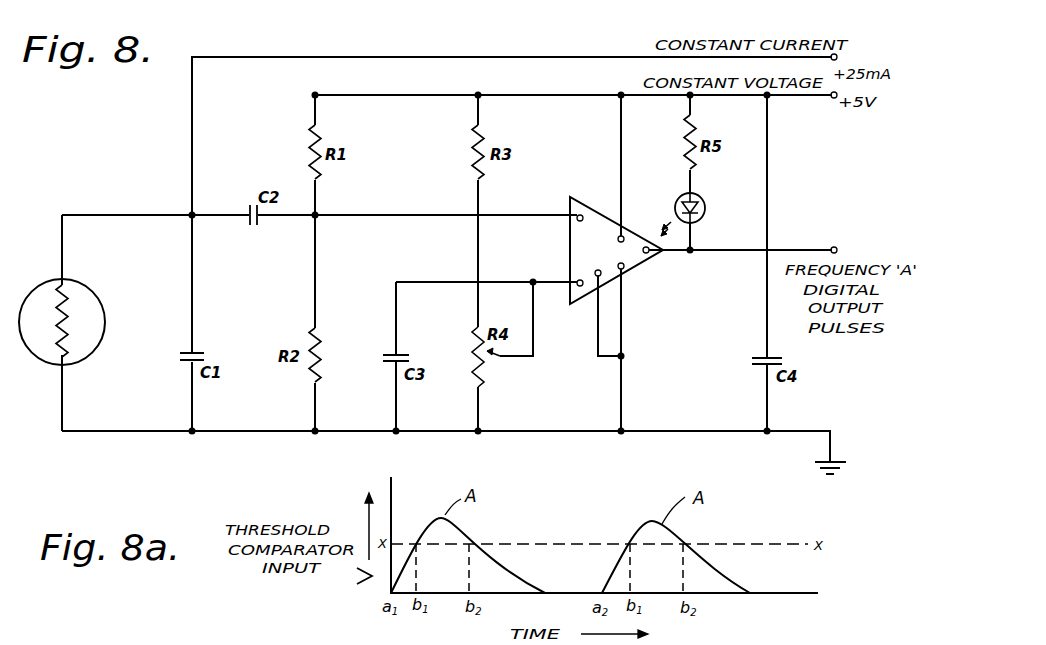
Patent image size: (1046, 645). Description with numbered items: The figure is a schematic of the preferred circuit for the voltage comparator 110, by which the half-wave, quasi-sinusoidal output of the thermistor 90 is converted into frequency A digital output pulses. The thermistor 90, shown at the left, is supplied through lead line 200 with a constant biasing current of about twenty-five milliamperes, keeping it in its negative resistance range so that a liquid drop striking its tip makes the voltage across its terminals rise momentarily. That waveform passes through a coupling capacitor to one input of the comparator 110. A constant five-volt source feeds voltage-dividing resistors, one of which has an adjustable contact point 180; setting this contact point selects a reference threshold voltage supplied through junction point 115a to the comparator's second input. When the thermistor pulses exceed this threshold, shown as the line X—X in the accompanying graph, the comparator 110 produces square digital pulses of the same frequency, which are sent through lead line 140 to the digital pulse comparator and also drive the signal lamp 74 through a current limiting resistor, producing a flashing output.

The lead line 200 is at (332, 57).
The thermistor 90 is at (103, 308).
The voltage comparator 110 is at (584, 200).
The junction point 115a is at (533, 282).
The signal lamp 74 is at (672, 206).
The lead line 140 is at (810, 250).
The adjustable contact point 180 is at (497, 358).